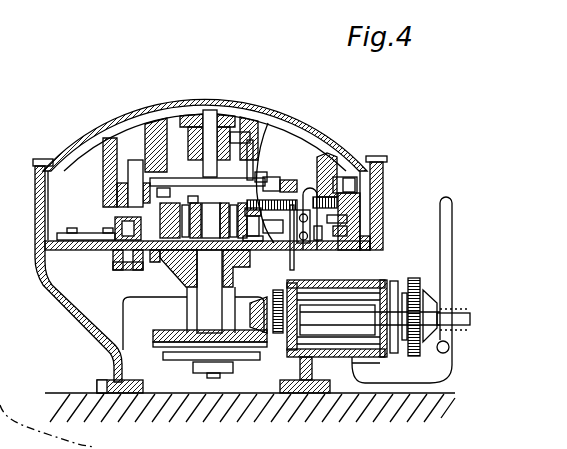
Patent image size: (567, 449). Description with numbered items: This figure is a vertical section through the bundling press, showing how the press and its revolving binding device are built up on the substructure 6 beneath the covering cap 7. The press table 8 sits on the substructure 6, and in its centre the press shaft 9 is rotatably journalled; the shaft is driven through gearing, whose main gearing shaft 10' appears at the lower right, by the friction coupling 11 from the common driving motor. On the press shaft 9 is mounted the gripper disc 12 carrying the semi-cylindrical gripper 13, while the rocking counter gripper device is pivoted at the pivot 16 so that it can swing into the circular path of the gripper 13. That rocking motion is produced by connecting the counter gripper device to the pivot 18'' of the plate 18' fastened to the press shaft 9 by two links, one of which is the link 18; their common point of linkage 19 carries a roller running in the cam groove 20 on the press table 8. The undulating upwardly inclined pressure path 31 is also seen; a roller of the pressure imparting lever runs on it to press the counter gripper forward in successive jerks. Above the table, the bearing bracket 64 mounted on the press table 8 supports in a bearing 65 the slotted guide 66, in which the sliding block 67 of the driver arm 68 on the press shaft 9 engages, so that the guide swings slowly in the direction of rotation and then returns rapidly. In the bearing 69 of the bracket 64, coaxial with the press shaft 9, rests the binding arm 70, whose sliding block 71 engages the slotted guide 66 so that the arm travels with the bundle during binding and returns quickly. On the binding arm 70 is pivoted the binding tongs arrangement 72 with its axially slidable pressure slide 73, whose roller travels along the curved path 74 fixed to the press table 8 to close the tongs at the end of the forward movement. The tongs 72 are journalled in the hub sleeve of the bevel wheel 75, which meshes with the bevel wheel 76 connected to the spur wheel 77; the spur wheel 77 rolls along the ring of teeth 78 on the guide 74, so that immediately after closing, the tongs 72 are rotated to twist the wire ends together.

The substructure 6 is at (68, 313).
The covering cap 7 is at (103, 128).
The press table 8 is at (78, 251).
The press shaft 9 is at (178, 263).
The main gearing shaft 10' is at (362, 318).
The friction coupling 11 is at (420, 344).
The gripper disc 12 is at (166, 244).
The gripper 13 is at (121, 224).
The pivot 16 is at (196, 212).
The link 18 is at (272, 181).
The plate 18' is at (260, 180).
The pivot 18'' is at (211, 291).
The common point of linkage 19 is at (253, 243).
The cam groove 20 is at (258, 243).
The pressure path 31 is at (120, 270).
The bearing bracket 64 is at (83, 197).
The bearing 65 is at (132, 165).
The slotted guide 66 is at (236, 187).
The sliding block 67 is at (170, 192).
The driver arm 68 is at (197, 200).
The bearing 69 is at (213, 117).
The binding arm 70 is at (262, 176).
The sliding block 71 is at (268, 178).
The binding tongs arrangement 72 is at (293, 241).
The pressure slide 73 is at (376, 240).
The curved path 74 is at (352, 224).
The bevel wheel 75 is at (317, 241).
The bevel wheel 76 is at (355, 213).
The spur wheel 77 is at (347, 193).
The ring of teeth 78 is at (355, 203).